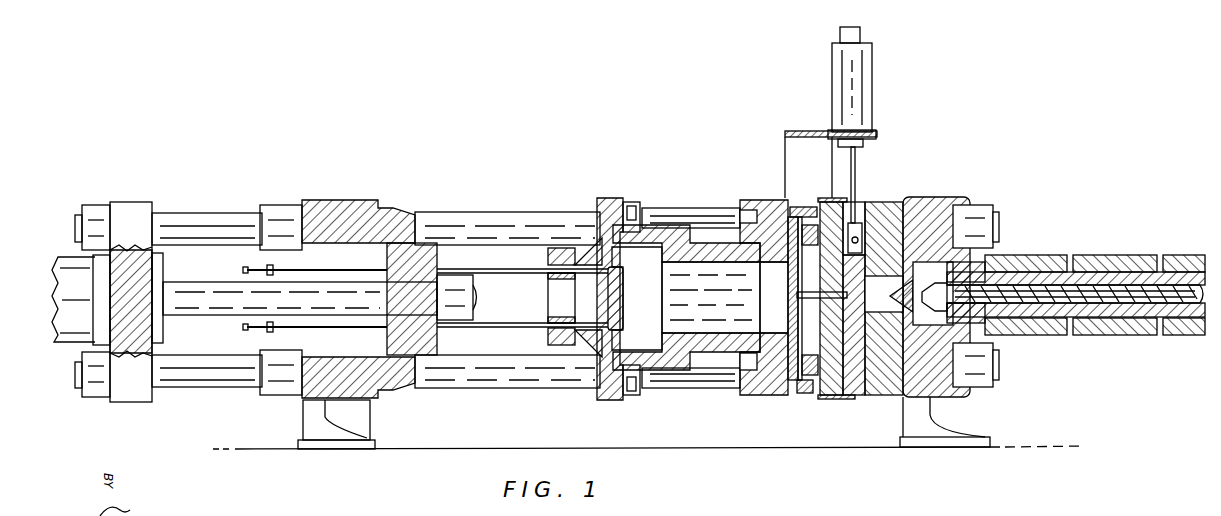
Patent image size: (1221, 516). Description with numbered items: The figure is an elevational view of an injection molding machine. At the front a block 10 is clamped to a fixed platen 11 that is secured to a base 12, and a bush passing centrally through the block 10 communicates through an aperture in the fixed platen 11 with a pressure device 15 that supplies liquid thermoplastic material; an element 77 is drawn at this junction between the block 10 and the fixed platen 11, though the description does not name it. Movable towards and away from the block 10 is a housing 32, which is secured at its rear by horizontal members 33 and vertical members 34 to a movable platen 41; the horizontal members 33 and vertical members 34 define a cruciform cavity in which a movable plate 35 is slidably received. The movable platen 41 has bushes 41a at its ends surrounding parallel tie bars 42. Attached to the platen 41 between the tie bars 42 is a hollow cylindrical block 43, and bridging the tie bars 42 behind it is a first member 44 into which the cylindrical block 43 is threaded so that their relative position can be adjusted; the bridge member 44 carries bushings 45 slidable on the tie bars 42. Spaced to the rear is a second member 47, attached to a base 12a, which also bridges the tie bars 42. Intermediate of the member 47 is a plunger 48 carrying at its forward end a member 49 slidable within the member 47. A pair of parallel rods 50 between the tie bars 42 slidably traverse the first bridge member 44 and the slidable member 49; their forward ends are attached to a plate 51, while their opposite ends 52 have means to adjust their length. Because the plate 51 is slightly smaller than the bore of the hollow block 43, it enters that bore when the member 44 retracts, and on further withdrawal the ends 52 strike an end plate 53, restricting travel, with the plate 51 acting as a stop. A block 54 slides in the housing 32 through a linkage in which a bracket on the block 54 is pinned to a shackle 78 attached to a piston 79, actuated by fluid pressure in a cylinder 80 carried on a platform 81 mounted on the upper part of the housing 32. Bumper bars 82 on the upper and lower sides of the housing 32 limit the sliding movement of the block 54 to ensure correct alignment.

The block 10 is at (877, 210).
The fixed platen 11 is at (937, 218).
The base 12 is at (927, 427).
The base 12a is at (335, 430).
The pressure device 15 is at (1100, 253).
The housing 32 is at (828, 370).
The horizontal members 33 is at (807, 205).
The vertical members 34 is at (810, 268).
The movable plate 35 is at (787, 312).
The movable platen 41 is at (770, 207).
The bushes 41a is at (742, 213).
The tie bars 42 is at (523, 218).
The hollow cylindrical block 43 is at (710, 280).
The first member 44 is at (603, 200).
The bushings 45 is at (633, 228).
The second member 47 is at (345, 205).
The plunger 48 is at (195, 287).
The member 49 is at (418, 258).
The rods 50 is at (495, 268).
The plate 51 is at (623, 293).
The ends 52 is at (240, 268).
The end plate 53 is at (168, 251).
The block 54 is at (853, 370).
The sprue bushing 77 is at (892, 208).
The shackle 78 is at (862, 227).
The piston 79 is at (858, 163).
The cylinder 80 is at (858, 80).
The platform 81 is at (812, 132).
The bumper bars 82 is at (823, 196).